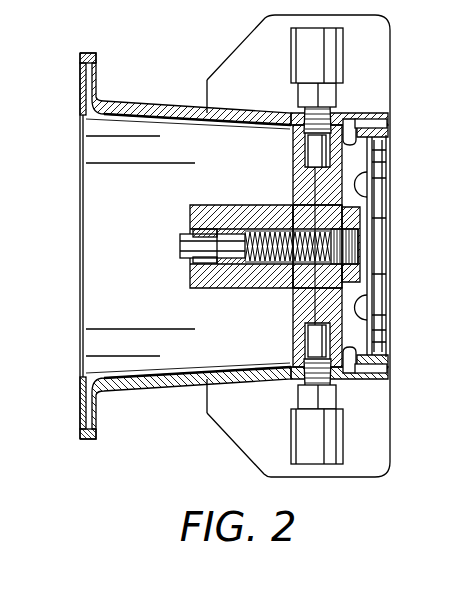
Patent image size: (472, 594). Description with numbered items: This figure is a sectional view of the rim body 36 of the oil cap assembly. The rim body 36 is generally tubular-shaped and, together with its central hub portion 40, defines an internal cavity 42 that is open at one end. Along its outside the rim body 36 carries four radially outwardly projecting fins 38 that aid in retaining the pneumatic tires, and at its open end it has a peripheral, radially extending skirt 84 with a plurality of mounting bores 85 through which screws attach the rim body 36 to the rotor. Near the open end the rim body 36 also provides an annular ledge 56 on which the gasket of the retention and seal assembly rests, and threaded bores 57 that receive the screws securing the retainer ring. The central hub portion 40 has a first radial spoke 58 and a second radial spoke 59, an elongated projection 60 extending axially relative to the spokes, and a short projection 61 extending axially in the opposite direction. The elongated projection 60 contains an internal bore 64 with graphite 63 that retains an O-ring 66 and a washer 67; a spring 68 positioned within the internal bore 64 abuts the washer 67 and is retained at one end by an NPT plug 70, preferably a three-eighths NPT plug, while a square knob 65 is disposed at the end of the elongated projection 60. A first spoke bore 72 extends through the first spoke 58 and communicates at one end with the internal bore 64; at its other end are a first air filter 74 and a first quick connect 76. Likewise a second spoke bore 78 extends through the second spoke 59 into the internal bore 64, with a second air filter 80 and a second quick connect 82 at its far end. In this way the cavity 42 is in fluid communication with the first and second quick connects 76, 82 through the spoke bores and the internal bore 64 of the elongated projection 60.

The rim body 36 is at (142, 104).
The radially outwardly projecting fins 38 is at (390, 57).
The central hub portion 40 is at (236, 162).
The internal cavity 42 is at (101, 197).
The annular ledge 56 is at (390, 145).
The threaded bores 57 is at (385, 125).
The first radial spoke 58 is at (293, 150).
The second radial spoke 59 is at (305, 327).
The elongated projection 60 is at (207, 288).
The short projection 61 is at (355, 215).
The graphite 63 is at (200, 224).
The internal bore 64 is at (180, 245).
The square knob 65 is at (193, 259).
The O-ring 66 is at (256, 276).
The washer 67 is at (217, 212).
The spring 68 is at (290, 266).
The NPT plug 70 is at (350, 250).
The first spoke bore 72 is at (313, 197).
The first air filter 74 is at (326, 160).
The first quick connect 76 is at (290, 60).
The second spoke bore 78 is at (352, 276).
The second air filter 80 is at (308, 345).
The second quick connect 82 is at (292, 432).
The skirt 84 is at (90, 53).
The mounting bores 85 is at (80, 73).